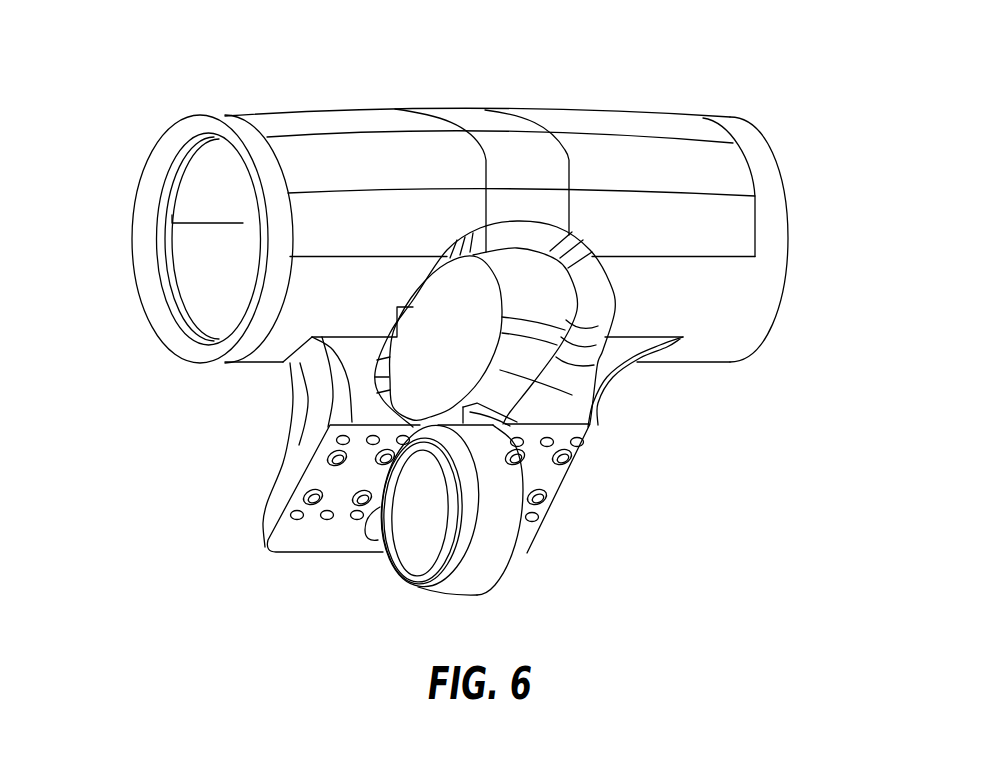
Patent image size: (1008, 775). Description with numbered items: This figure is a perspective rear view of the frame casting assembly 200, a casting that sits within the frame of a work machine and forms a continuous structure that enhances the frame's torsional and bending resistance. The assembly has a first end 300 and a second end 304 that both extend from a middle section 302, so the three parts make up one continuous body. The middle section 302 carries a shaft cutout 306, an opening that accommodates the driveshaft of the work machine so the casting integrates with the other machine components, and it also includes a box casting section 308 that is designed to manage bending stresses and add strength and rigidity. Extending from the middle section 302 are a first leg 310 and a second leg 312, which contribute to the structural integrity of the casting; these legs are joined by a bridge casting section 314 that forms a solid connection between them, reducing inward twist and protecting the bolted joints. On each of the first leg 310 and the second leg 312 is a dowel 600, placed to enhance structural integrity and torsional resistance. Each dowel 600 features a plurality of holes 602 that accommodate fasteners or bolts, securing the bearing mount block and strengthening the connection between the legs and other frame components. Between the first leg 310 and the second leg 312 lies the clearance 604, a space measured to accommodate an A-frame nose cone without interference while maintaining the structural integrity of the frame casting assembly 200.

The frame casting assembly 200 is at (461, 337).
The first end 300 is at (120, 211).
The middle section 302 is at (464, 85).
The second end 304 is at (796, 209).
The shaft cutout 306 is at (460, 356).
The box casting section 308 is at (540, 167).
The first leg 310 is at (282, 502).
The second leg 312 is at (599, 411).
The bridge casting section 314 is at (330, 553).
The dowel 600 is at (534, 531).
The holes 602 is at (330, 457).
The clearance 604 is at (391, 573).